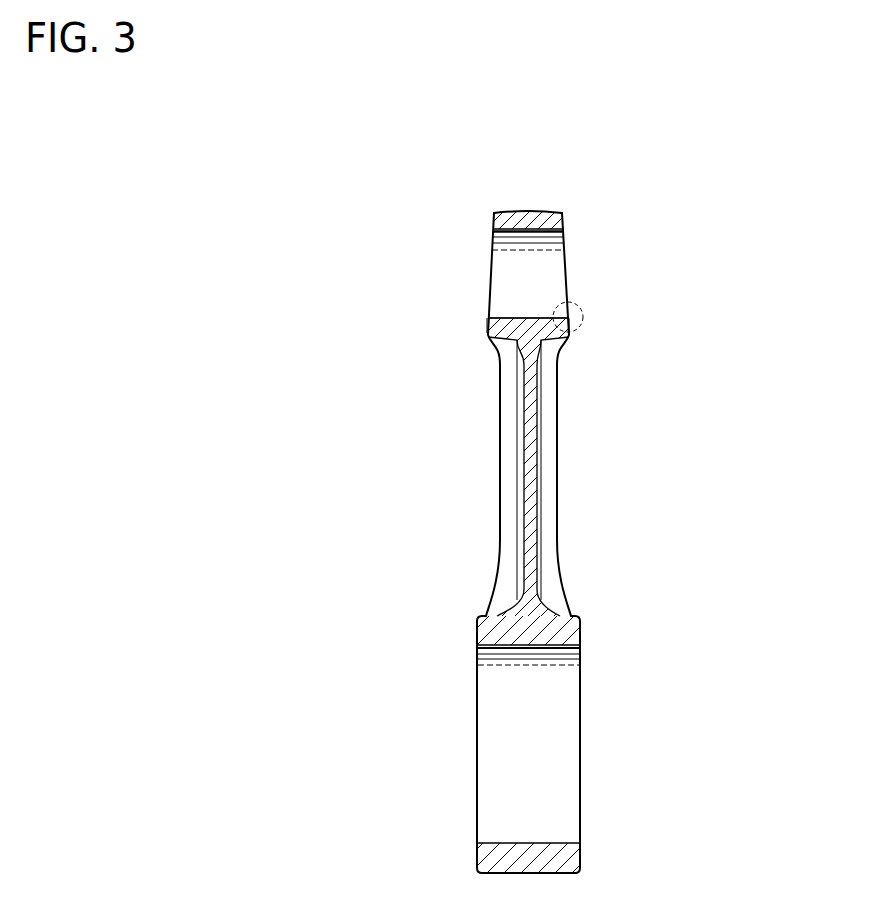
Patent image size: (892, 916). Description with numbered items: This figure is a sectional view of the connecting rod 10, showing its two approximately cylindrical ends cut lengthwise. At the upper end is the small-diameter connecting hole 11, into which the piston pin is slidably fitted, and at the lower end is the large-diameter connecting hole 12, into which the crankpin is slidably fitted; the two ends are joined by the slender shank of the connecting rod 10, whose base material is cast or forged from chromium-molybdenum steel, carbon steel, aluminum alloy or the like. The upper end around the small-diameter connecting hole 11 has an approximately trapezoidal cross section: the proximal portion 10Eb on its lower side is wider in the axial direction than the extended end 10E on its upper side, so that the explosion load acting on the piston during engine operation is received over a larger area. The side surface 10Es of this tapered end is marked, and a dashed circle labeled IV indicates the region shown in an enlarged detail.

The connecting rod 10 is at (693, 262).
The extended end 10E is at (577, 191).
The tip side surface / edge 10Es is at (487, 321).
The proximal portion 10Eb is at (487, 337).
The small-diameter connecting hole 11 is at (535, 232).
The large-diameter connecting hole 12 is at (552, 647).
The section detail indicator IV is at (582, 306).